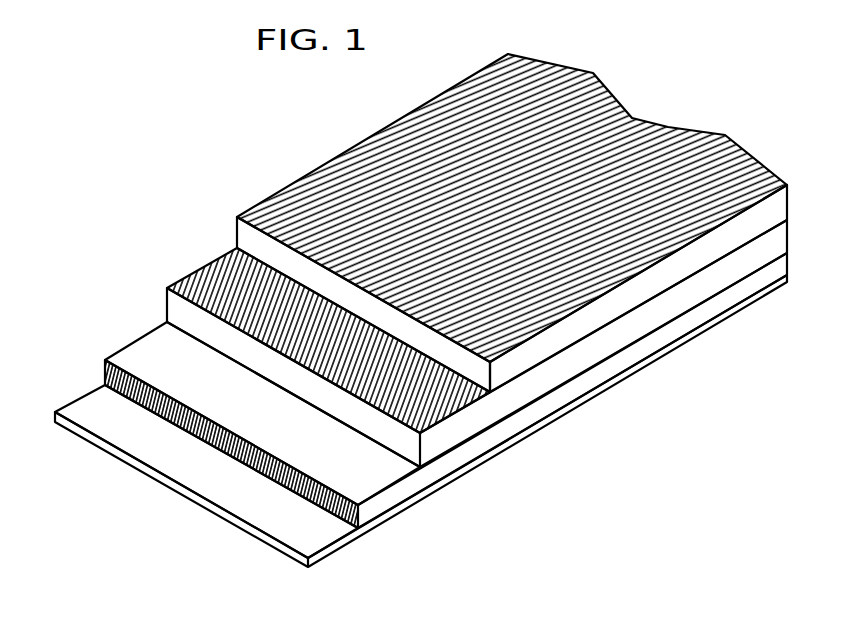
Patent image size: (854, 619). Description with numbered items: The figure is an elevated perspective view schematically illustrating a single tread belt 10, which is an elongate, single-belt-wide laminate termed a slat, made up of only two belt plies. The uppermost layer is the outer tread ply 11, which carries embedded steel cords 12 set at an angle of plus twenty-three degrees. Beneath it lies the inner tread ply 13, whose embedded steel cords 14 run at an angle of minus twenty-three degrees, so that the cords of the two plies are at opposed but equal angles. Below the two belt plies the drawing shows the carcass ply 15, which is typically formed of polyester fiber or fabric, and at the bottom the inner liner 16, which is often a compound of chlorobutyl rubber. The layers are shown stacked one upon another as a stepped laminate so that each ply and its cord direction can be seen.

The belt 10 is at (272, 138).
The outer tread ply 11 is at (278, 204).
The steel cords 12 is at (250, 238).
The inner tread ply 13 is at (200, 287).
The steel cords 14 is at (178, 309).
The carcass ply 15 is at (137, 364).
The inner liner 16 is at (144, 449).